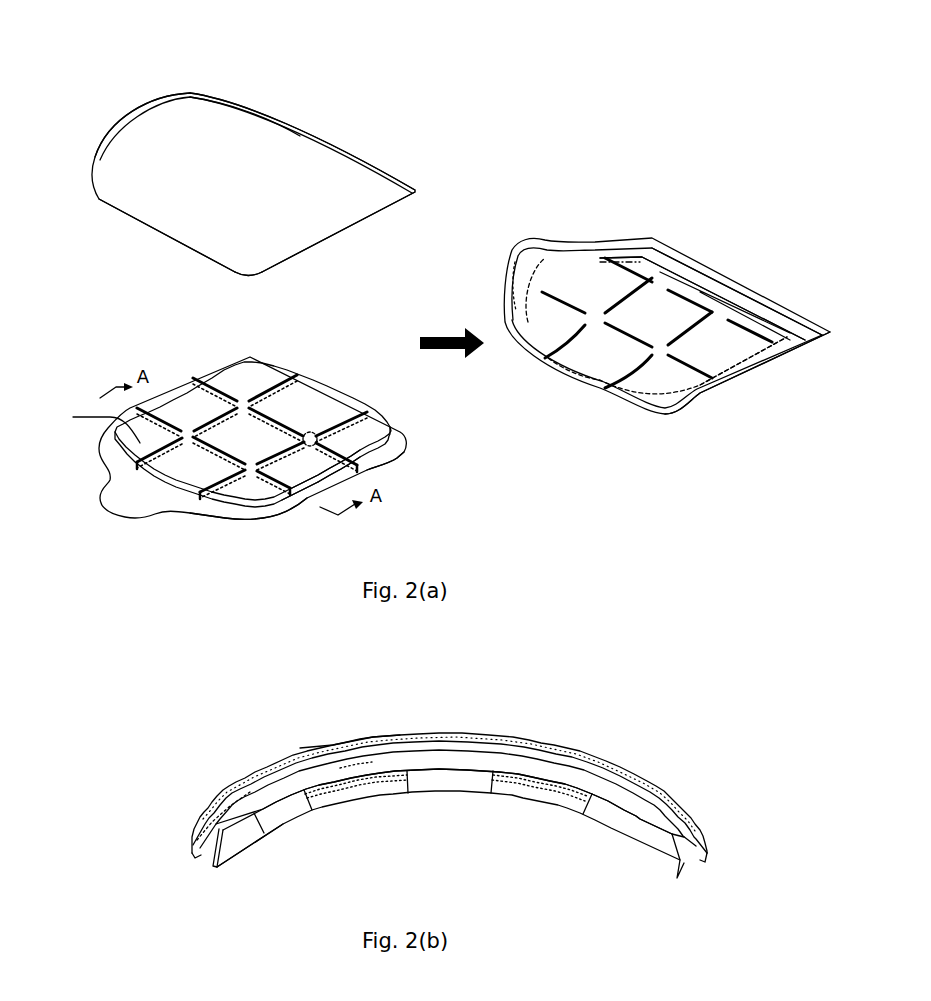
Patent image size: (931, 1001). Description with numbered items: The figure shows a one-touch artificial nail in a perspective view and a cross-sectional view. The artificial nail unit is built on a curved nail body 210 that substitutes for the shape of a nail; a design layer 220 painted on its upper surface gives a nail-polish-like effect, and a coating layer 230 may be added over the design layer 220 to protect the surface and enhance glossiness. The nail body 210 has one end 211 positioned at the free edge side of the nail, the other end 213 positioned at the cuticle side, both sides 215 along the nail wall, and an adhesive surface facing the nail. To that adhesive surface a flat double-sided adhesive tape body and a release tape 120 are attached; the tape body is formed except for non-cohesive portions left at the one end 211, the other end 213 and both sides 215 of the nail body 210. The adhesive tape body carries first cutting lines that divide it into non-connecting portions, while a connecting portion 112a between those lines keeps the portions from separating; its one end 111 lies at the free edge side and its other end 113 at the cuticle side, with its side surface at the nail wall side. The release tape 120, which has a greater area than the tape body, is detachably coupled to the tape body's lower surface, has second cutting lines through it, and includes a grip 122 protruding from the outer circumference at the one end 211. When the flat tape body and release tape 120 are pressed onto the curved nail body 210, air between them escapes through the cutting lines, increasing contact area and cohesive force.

The nail body 210 is at (465, 760).
The design layer 220 is at (540, 752).
The coating layer 230 is at (603, 757).
The one end 211 is at (323, 235).
The other end 213 is at (113, 128).
The both sides 215 is at (337, 152).
The one end 111 is at (332, 395).
The connecting portion 112a is at (312, 432).
The other end 113 is at (163, 482).
The release tape 120 is at (231, 523).
The grip 122 is at (113, 498).